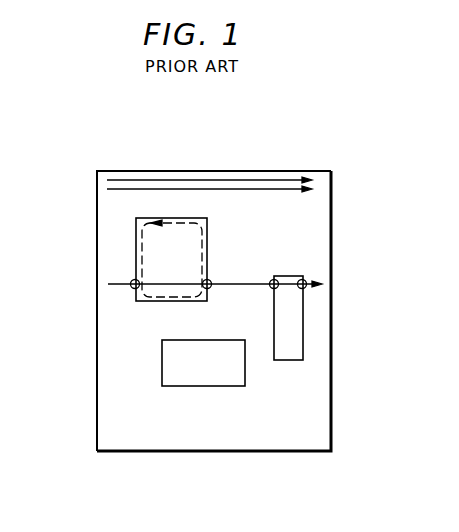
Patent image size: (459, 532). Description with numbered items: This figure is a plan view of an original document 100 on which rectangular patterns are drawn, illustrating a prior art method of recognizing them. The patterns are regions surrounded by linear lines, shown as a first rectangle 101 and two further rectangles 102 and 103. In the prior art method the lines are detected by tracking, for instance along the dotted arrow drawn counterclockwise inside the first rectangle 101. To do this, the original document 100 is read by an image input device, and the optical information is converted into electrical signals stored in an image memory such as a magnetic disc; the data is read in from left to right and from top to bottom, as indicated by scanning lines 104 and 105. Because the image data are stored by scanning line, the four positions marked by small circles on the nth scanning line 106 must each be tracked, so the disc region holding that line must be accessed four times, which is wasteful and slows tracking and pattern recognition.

The original document 100 is at (333, 205).
The first rectangle 101 is at (136, 245).
The rectangular region 102 is at (303, 346).
The rectangular region 103 is at (215, 387).
The scanning line 104 is at (218, 180).
The scanning line 105 is at (255, 189).
The nth scanning line 106 is at (252, 283).